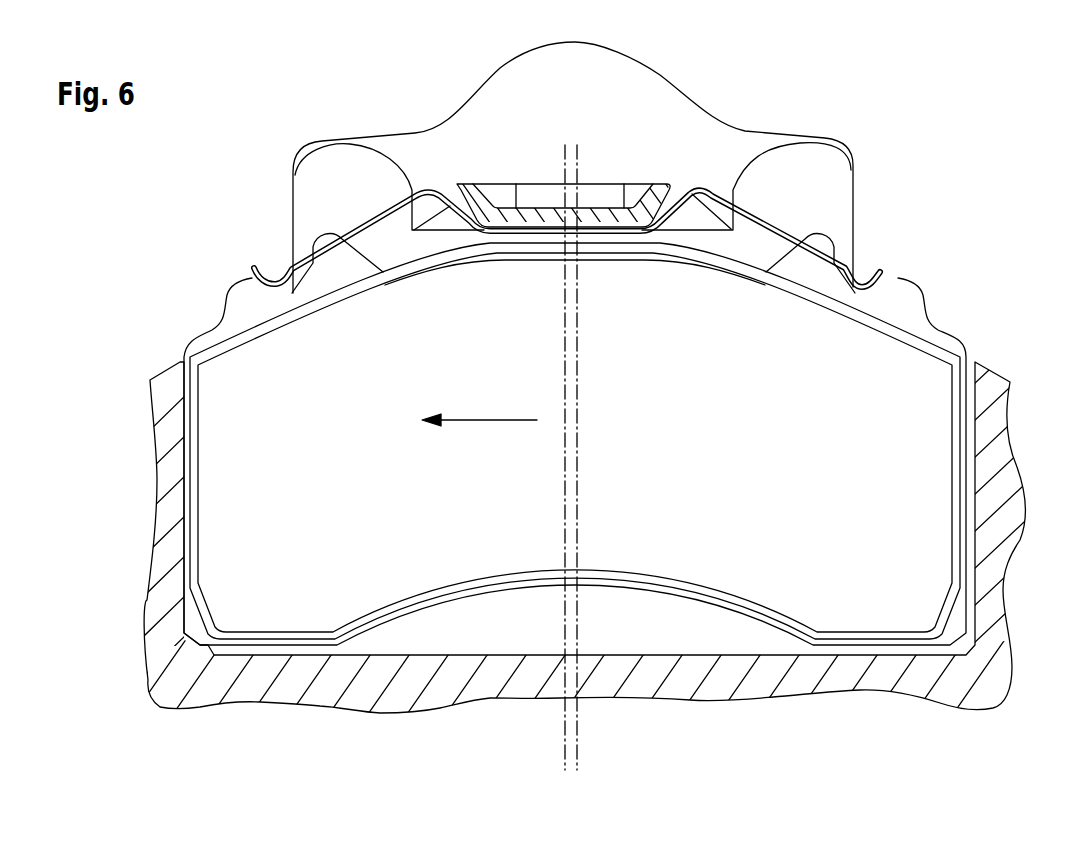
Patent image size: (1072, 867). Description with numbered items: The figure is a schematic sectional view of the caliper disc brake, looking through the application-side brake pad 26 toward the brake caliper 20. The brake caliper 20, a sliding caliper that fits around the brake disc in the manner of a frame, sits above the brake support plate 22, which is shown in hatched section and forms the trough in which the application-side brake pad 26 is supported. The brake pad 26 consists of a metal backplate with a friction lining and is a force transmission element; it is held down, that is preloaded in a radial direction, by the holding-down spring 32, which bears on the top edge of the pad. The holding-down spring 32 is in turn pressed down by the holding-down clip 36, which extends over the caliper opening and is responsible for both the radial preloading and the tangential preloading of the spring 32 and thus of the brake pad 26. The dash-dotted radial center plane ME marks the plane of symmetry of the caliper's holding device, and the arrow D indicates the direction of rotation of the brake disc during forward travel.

The brake caliper 20 is at (430, 134).
The brake support plate 22 is at (908, 683).
The application-side brake pad 26 is at (918, 367).
The holding-down spring 32 is at (731, 197).
The holding-down clip 36 is at (606, 184).
The radial center plane ME is at (580, 747).
The direction of rotation D is at (483, 421).